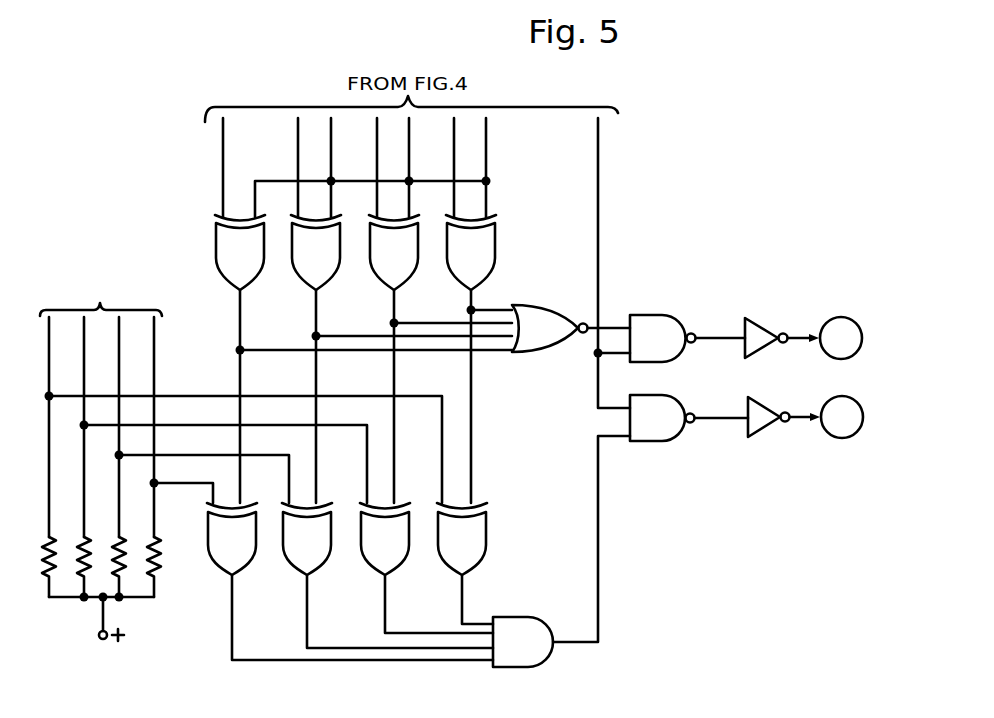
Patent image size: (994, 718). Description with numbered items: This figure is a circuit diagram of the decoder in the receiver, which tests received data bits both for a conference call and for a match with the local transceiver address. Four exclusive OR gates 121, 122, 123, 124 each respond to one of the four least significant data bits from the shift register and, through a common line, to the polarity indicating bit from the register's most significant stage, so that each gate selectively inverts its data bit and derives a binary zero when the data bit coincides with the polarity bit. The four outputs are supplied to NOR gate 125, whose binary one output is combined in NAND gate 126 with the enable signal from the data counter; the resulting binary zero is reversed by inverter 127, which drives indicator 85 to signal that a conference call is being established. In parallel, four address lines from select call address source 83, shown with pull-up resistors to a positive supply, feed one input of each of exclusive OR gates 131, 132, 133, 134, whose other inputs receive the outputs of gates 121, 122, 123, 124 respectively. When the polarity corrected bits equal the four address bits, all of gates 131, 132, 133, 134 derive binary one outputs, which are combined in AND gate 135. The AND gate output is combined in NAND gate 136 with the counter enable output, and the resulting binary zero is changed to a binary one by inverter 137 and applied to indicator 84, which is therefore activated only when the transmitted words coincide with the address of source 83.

The select call address source 83 is at (101, 292).
The exclusive OR gate 121 is at (249, 284).
The exclusive OR gate 122 is at (325, 284).
The exclusive OR gate 123 is at (403, 284).
The exclusive OR gate 124 is at (492, 269).
The NOR gate 125 is at (546, 353).
The NAND gate 126 is at (649, 315).
The inverter 127 is at (763, 322).
The indicator 85 is at (848, 318).
The indicator 84 is at (858, 403).
The NAND gate 136 is at (657, 445).
The inverter 137 is at (766, 409).
The exclusive OR gate 131 is at (243, 568).
The exclusive OR gate 132 is at (318, 565).
The exclusive OR gate 133 is at (393, 562).
The exclusive OR gate 134 is at (470, 560).
The AND gate 135 is at (539, 617).